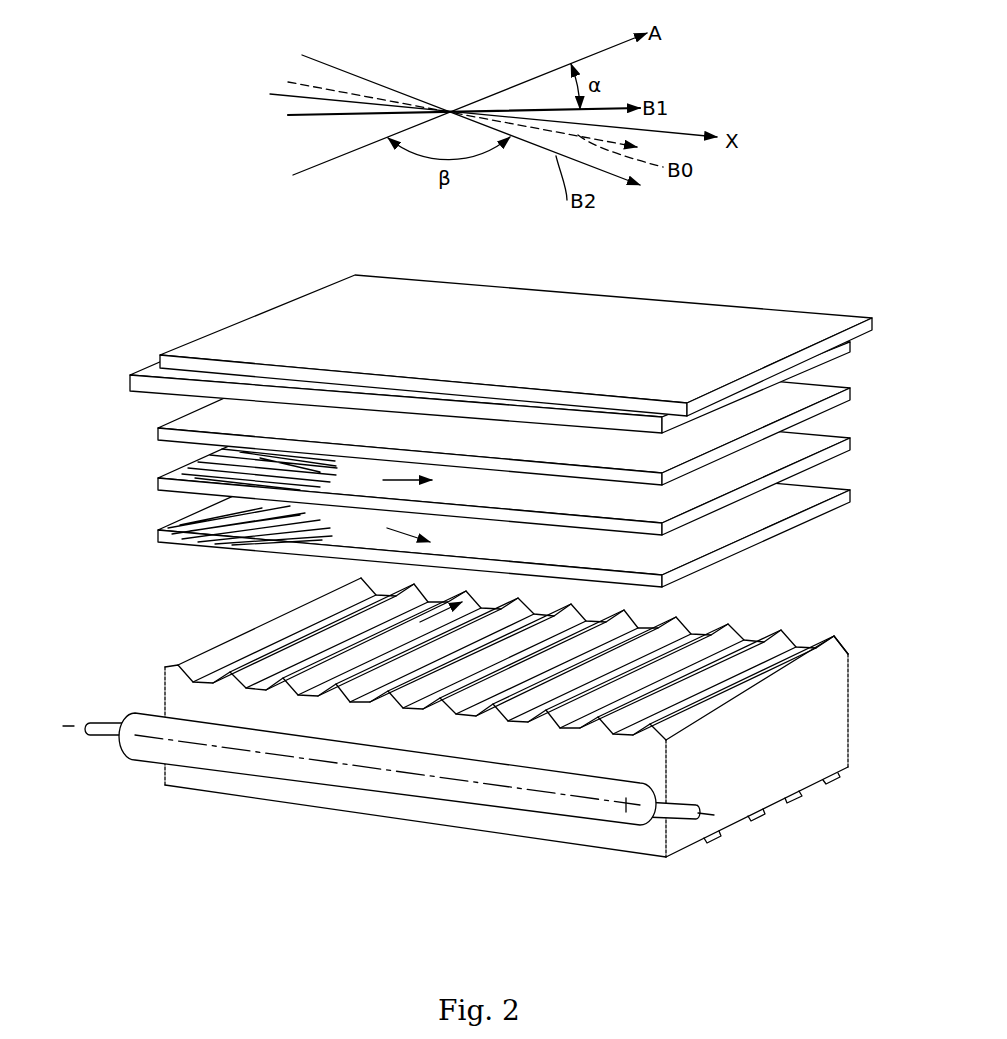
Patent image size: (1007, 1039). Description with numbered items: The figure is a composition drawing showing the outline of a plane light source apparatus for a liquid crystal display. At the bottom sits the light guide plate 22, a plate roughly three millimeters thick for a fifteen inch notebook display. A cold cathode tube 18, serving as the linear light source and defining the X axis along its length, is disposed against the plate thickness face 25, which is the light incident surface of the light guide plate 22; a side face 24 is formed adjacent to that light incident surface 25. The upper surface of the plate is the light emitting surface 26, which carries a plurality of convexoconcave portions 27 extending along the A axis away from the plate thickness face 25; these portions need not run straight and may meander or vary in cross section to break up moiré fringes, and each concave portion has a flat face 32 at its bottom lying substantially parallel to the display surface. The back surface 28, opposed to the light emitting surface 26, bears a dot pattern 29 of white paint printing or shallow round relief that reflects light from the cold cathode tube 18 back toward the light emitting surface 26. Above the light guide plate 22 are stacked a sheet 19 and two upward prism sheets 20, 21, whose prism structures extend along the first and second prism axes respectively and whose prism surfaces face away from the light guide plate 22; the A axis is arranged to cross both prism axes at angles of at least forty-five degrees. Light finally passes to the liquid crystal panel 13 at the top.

The liquid crystal panel 13 is at (776, 318).
The cold cathode tube 18 is at (358, 773).
The diffuser sheet 19 is at (833, 385).
The prism sheet 20 is at (827, 430).
The prism sheet 21 is at (825, 488).
The light guide plate 22 is at (495, 735).
The side face 24 is at (822, 702).
The plate thickness face 25 is at (177, 696).
The light emitting surface 26 is at (273, 630).
The convexoconcave portions 27 is at (513, 646).
The back surface 28 is at (541, 848).
The dot pattern 29 is at (803, 790).
The flat face 32 is at (505, 735).